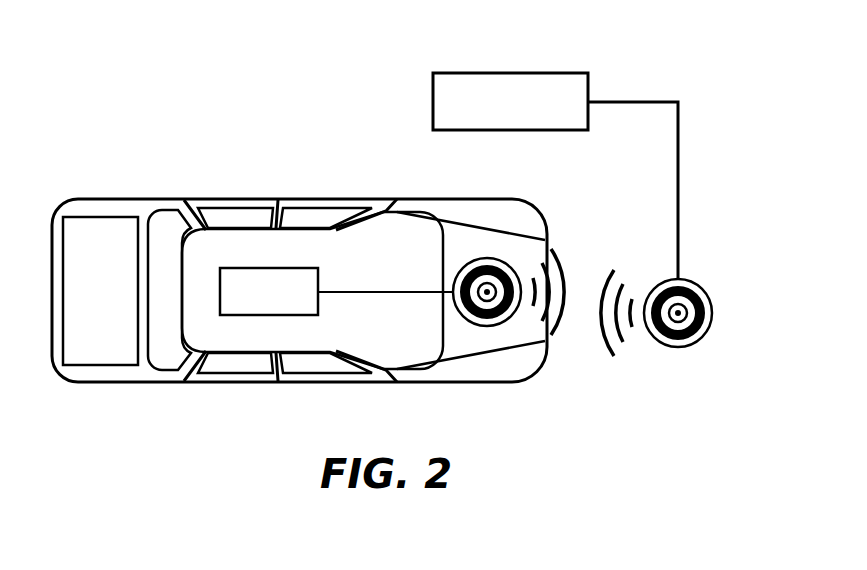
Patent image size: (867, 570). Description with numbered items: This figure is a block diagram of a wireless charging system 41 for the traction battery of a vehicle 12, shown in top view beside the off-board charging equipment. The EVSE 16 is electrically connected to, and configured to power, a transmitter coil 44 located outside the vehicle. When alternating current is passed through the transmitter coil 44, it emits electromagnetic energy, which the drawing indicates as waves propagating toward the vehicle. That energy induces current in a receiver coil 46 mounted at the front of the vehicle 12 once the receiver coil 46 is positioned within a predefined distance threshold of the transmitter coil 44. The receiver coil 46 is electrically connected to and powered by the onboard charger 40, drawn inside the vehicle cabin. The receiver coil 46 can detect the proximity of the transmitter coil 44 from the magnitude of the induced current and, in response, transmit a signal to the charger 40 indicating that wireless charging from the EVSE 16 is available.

The wireless charging system 41 is at (133, 124).
The vehicle 12 is at (268, 199).
The charger 40 is at (257, 268).
The receiver coil 46 is at (482, 258).
The EVSE 16 is at (512, 73).
The transmitter coil 44 is at (690, 281).